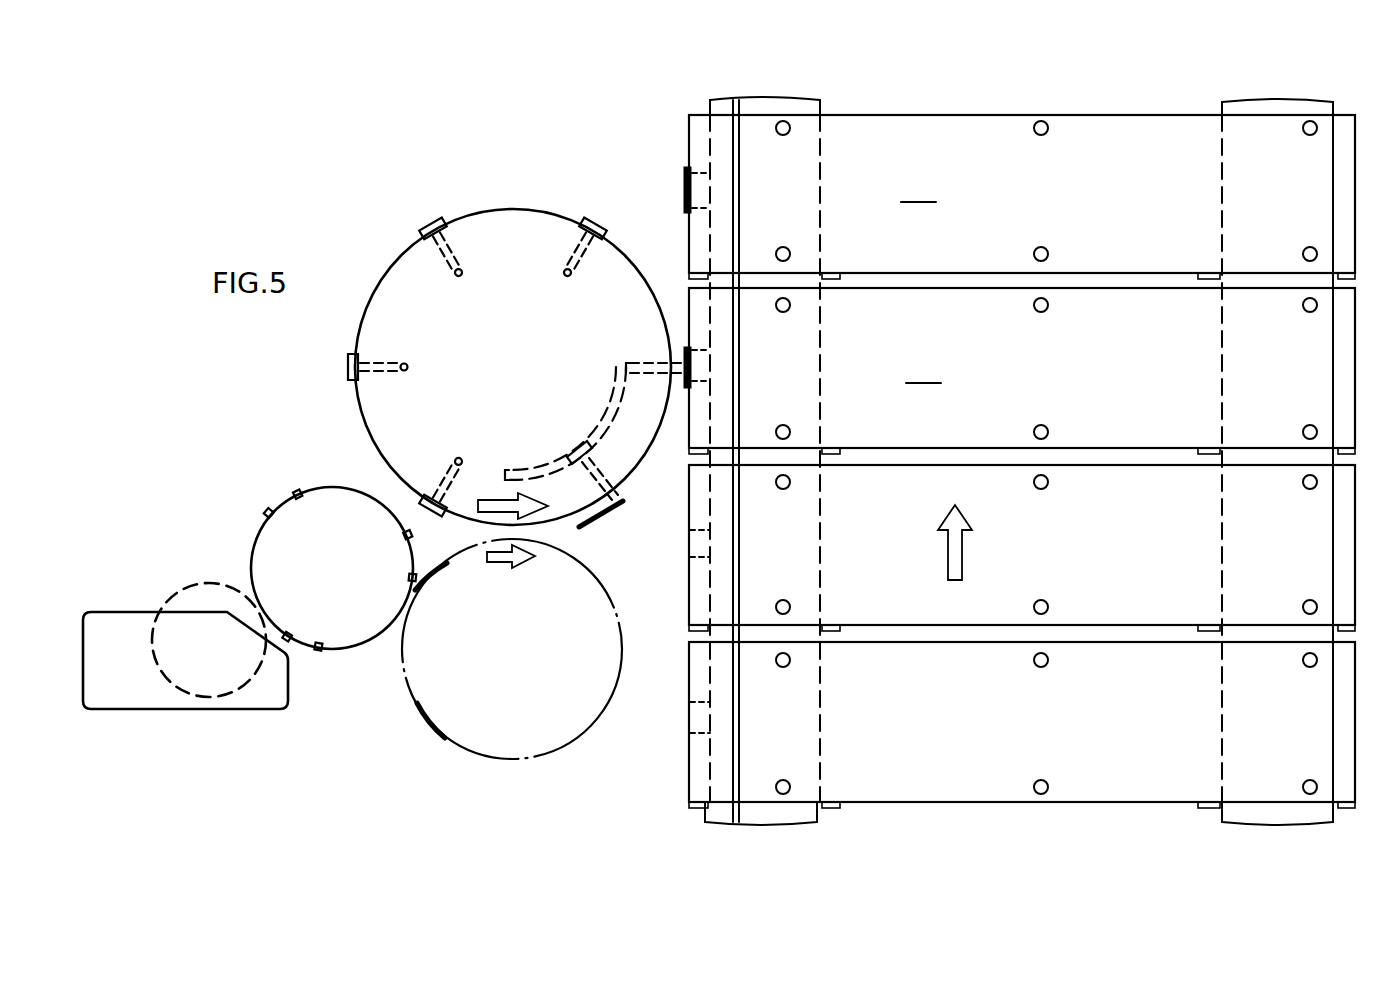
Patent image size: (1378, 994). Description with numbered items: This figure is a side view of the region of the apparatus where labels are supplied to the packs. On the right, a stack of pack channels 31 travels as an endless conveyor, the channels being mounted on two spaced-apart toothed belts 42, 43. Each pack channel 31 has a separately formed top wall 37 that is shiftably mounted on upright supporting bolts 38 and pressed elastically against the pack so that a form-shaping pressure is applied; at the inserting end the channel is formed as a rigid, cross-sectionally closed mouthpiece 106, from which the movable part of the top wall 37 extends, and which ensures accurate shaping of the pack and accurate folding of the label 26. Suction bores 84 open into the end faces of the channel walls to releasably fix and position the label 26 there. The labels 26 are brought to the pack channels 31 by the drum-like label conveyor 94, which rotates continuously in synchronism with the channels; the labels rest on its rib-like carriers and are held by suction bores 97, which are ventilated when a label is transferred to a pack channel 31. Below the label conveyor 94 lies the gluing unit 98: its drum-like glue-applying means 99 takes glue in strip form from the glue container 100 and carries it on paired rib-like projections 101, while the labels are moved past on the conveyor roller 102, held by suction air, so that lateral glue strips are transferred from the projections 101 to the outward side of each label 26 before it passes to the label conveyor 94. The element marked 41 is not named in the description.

The label conveyor 94 is at (500, 160).
The suction bores 97 is at (575, 255).
The label 26 is at (680, 183).
The suction bores 84 is at (714, 70).
The pack channels 31 is at (928, 100).
The top wall 37 is at (921, 277).
The supporting bolts 38 is at (1046, 122).
The fold line 41 is at (850, 100).
The toothed belt 42 is at (766, 100).
The toothed belt 43 is at (1275, 102).
The mouthpiece 106 is at (722, 245).
The glue-applying means 99 is at (252, 560).
The projections 101 is at (300, 492).
The glue container 100 is at (125, 693).
The conveyor roller 102 is at (568, 750).
The gluing unit 98 is at (358, 712).